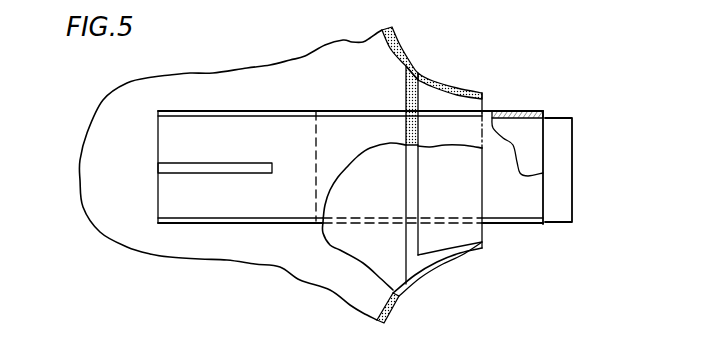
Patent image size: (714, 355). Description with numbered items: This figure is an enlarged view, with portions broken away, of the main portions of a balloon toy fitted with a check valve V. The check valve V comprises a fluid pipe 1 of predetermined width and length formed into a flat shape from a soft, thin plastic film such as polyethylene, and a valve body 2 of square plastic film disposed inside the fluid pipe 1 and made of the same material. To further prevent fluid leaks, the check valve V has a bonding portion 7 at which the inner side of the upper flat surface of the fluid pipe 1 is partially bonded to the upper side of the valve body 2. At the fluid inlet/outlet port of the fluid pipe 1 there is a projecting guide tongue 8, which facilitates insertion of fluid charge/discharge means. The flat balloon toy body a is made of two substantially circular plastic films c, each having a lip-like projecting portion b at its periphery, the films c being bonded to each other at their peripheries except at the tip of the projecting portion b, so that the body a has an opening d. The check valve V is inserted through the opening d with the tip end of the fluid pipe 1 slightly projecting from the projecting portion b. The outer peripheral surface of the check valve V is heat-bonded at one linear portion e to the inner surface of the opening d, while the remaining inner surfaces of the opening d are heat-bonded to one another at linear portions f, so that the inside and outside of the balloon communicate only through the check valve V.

The check valve V is at (200, 106).
The fluid pipe 1 is at (502, 210).
The valve body 2 is at (313, 142).
The bonding portion 7 is at (200, 166).
The guide tongue 8 is at (557, 181).
The balloon toy body a is at (399, 43).
The projecting portion b is at (432, 78).
The plastic films c is at (307, 268).
The opening d is at (470, 105).
The linear portion e is at (408, 154).
The linear portions f is at (405, 86).